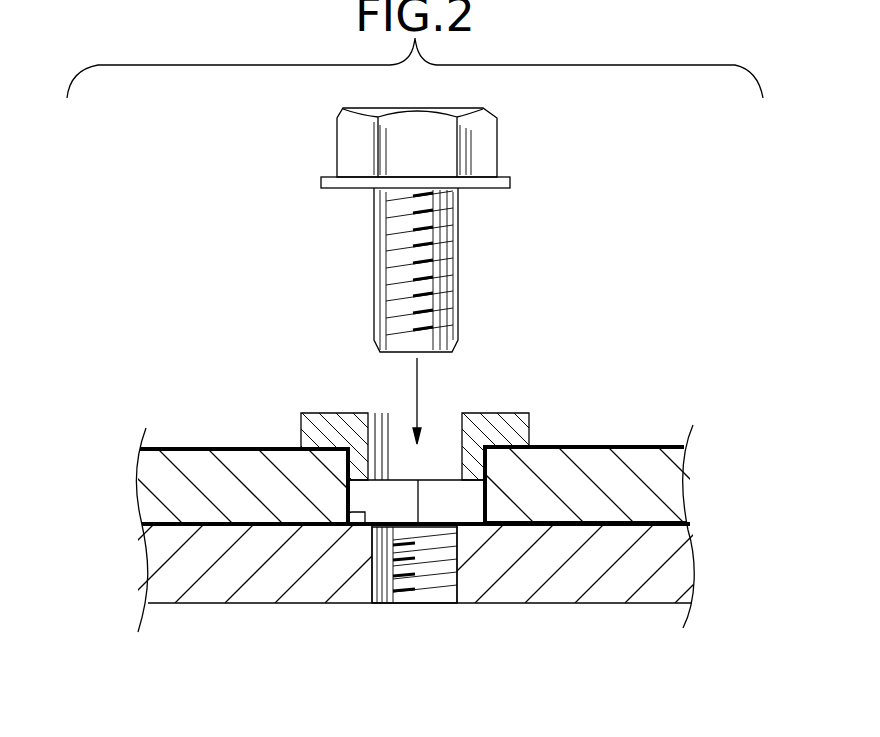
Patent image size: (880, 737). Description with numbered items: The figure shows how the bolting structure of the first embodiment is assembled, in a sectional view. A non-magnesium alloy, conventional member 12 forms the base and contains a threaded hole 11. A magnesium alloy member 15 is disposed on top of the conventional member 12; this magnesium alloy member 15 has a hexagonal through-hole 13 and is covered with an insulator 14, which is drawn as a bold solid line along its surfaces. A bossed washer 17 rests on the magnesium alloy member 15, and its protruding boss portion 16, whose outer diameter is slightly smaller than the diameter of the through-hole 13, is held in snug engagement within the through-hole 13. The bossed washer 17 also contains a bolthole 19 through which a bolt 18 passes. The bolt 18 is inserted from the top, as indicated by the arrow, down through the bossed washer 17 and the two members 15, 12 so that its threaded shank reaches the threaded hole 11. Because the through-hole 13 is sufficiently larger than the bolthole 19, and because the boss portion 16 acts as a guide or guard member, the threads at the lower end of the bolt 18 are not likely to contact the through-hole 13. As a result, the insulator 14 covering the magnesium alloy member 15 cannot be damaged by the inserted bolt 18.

The threaded hole 11 is at (440, 572).
The conventional member 12 is at (147, 553).
The through-hole 13 is at (363, 515).
The insulator 14 is at (242, 448).
The magnesium alloy member 15 is at (137, 478).
The boss portion 16 is at (470, 482).
The bossed washer 17 is at (508, 413).
The bolt 18 is at (499, 140).
The bolthole 19 is at (456, 422).